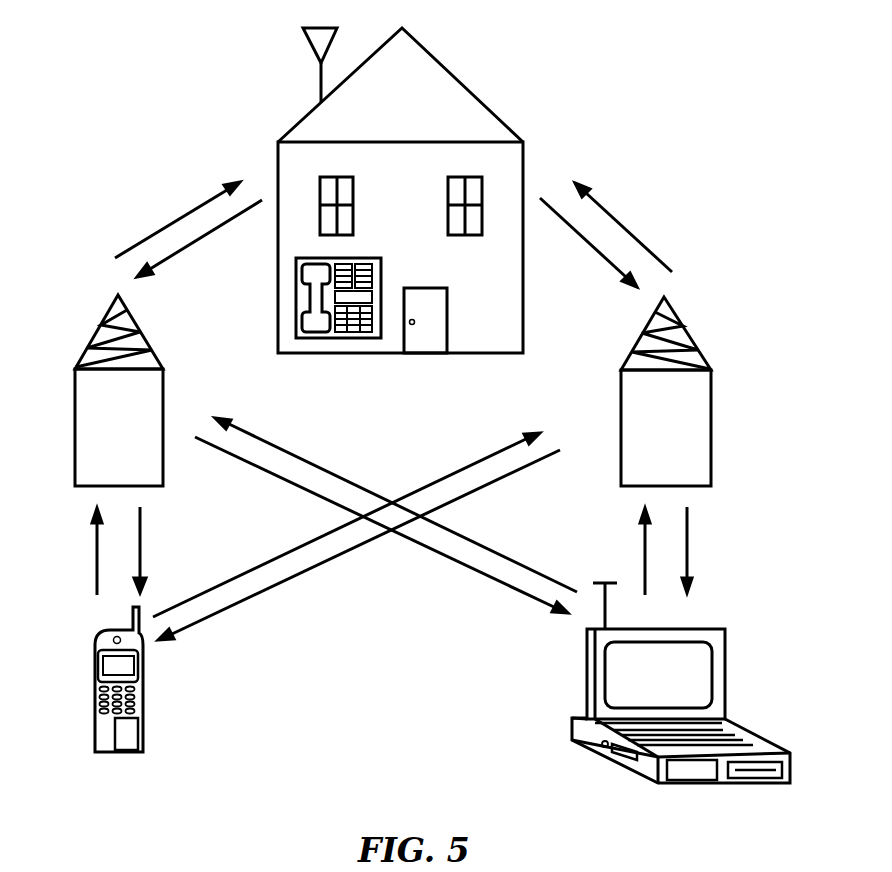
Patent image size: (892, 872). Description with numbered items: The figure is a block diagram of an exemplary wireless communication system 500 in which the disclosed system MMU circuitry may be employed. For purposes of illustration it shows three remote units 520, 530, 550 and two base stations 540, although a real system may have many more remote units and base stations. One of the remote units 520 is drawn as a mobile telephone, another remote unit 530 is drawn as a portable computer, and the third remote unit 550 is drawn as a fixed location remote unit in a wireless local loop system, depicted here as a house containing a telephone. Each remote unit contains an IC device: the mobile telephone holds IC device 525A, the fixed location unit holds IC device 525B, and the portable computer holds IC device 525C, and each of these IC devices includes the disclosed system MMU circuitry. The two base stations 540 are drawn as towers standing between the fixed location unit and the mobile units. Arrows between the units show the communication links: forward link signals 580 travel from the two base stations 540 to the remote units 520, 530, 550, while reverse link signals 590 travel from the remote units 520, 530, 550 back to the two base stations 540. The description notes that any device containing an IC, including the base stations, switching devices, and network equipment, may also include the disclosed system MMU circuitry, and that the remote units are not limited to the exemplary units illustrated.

The wireless communication system 500 is at (95, 37).
The remote unit 520 is at (98, 637).
The IC device 525A is at (128, 737).
The IC device 525B is at (342, 325).
The IC device 525C is at (697, 770).
The remote unit 530 is at (707, 628).
The base station 540 is at (95, 335).
The remote unit 550 is at (297, 306).
The forward link signals 580 is at (183, 213).
The reverse link signals 590 is at (185, 248).